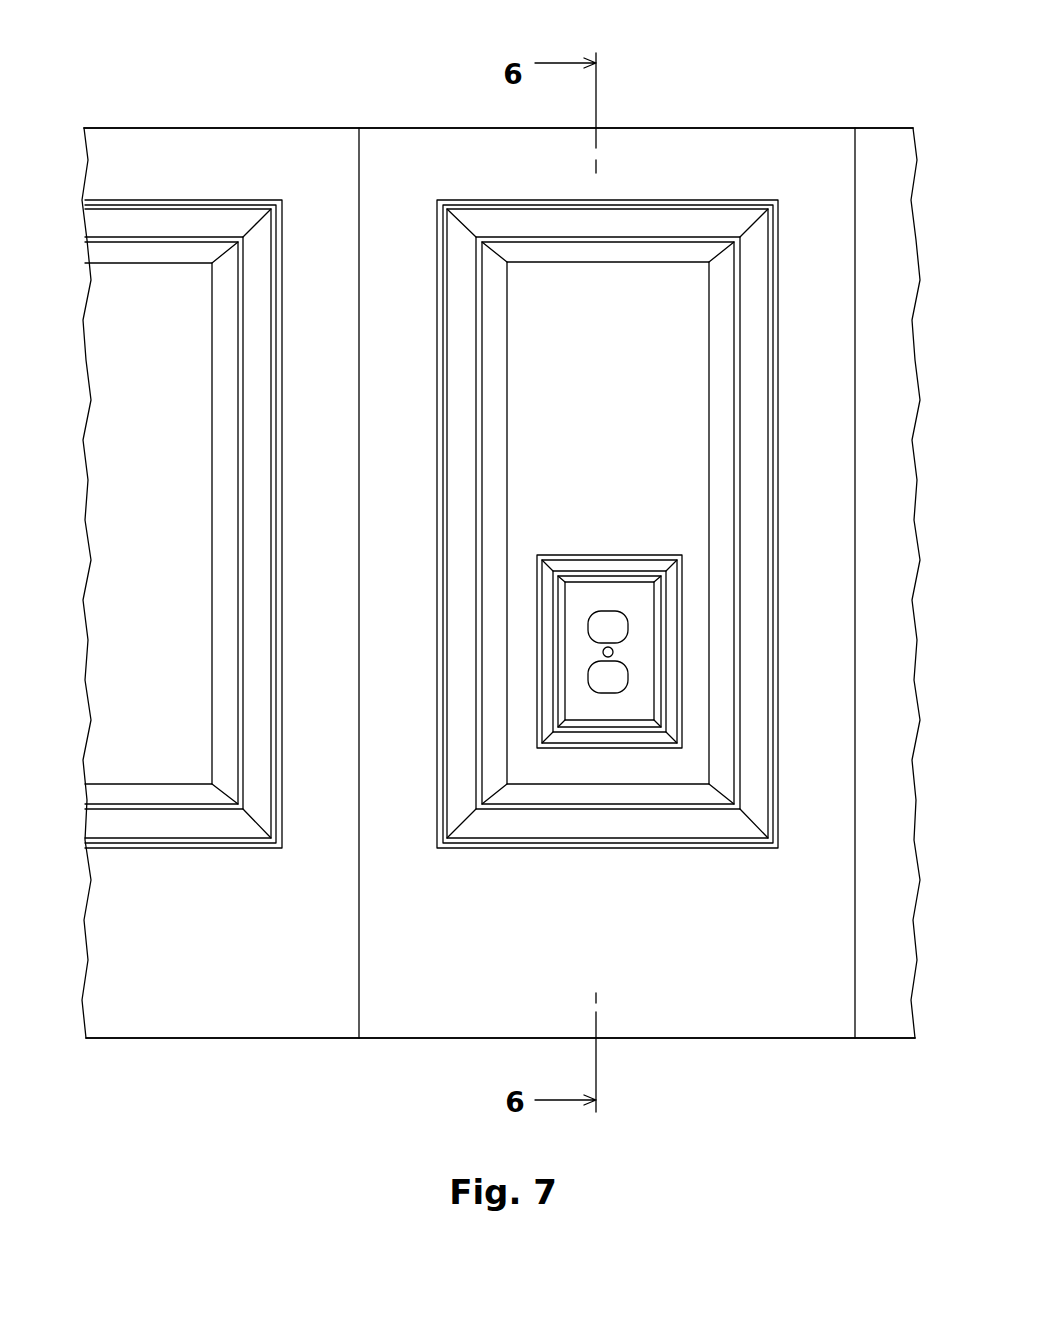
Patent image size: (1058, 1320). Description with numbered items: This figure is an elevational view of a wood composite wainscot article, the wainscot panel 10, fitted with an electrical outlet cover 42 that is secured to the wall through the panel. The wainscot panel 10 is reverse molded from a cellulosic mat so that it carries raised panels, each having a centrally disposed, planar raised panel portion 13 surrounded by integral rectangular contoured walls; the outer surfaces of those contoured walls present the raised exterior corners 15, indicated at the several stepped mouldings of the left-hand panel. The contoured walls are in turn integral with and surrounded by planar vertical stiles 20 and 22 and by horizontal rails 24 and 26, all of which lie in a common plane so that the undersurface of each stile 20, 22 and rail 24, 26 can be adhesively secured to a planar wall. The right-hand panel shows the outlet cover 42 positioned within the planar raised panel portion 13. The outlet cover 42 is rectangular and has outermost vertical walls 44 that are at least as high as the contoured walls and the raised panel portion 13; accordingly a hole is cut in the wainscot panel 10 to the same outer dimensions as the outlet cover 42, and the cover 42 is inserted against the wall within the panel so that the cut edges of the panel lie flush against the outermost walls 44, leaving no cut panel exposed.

The wainscot panel 10 is at (774, 162).
The planar raised panel portion 13 is at (128, 421).
The raised exterior corners 15 is at (213, 262).
The vertical stile 20 is at (383, 519).
The vertical stile 22 is at (304, 498).
The horizontal rail 24 is at (172, 914).
The horizontal rail 26 is at (108, 173).
The outlet cover 42 is at (613, 602).
The outermost vertical walls 44 is at (561, 560).